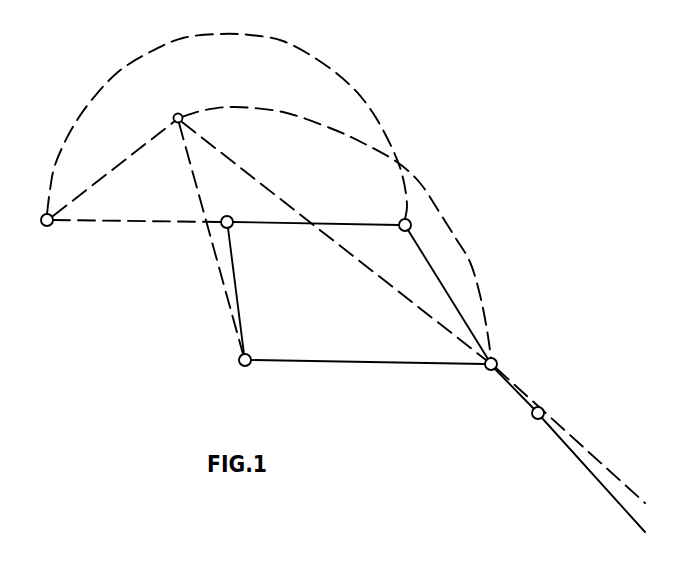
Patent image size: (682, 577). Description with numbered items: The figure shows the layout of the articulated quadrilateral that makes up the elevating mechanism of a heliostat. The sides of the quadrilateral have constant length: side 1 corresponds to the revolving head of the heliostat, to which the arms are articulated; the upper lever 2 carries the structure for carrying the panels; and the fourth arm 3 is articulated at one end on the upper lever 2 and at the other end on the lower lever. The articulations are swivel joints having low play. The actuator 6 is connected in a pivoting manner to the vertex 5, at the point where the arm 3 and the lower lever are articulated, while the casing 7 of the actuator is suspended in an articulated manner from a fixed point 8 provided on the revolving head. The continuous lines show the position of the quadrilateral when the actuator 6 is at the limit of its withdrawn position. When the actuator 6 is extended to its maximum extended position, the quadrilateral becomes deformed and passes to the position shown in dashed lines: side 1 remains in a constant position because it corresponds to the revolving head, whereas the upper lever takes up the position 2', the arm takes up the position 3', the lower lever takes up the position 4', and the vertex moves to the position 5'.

The side 1 is at (231, 297).
The upper lever 2 is at (316, 193).
The fourth arm 3 is at (460, 294).
The lower lever in extended position 4' is at (323, 271).
The vertex 5 is at (471, 397).
The actuator 6 is at (503, 378).
The casing 7 is at (600, 486).
The fixed point 8 is at (535, 420).
The upper lever in extended position 2' is at (137, 253).
The arm in extended position 3' is at (114, 166).
The vertex in extended position 5' is at (188, 90).